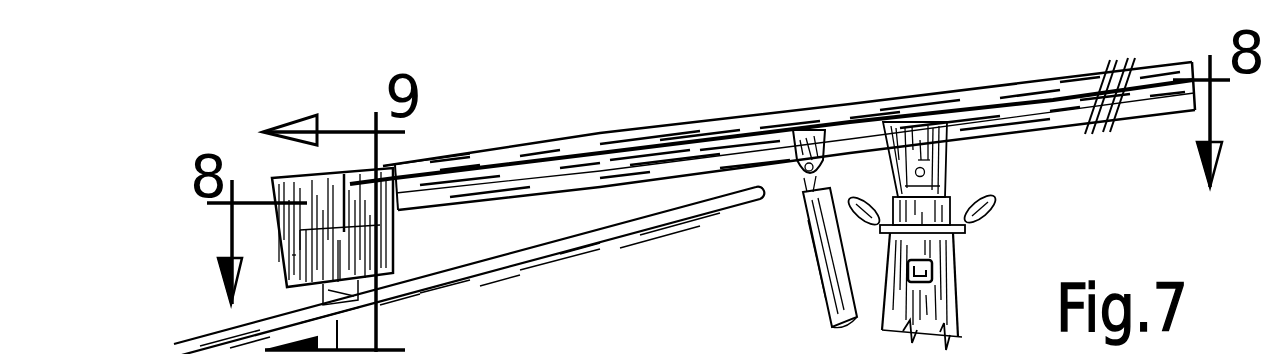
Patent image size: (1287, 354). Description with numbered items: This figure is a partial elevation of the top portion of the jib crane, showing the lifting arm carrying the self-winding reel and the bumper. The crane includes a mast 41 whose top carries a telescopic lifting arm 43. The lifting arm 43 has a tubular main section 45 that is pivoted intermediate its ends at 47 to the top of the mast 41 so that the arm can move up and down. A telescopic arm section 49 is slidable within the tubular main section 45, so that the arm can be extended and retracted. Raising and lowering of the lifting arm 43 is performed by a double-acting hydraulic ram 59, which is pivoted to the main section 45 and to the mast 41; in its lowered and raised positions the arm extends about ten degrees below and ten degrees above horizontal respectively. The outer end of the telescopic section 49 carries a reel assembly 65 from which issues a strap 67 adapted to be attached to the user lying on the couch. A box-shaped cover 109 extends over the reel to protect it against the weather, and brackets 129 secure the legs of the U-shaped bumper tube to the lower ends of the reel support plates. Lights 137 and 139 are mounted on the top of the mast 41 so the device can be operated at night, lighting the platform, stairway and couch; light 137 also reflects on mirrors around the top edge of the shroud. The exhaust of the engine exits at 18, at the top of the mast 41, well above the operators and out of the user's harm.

The exhaust exit 18 is at (932, 254).
The mast 41 is at (957, 307).
The telescopic lifting arm 43 is at (540, 141).
The main section 45 is at (492, 163).
The pivot 47 is at (925, 171).
The telescopic arm section 49 is at (385, 162).
The double-acting hydraulic ram 59 is at (838, 300).
The reel assembly 65 is at (400, 242).
The strap 67 is at (343, 331).
The box-shaped cover 109 is at (392, 262).
The brackets 129 is at (327, 293).
The light 137 is at (852, 205).
The light 139 is at (992, 200).